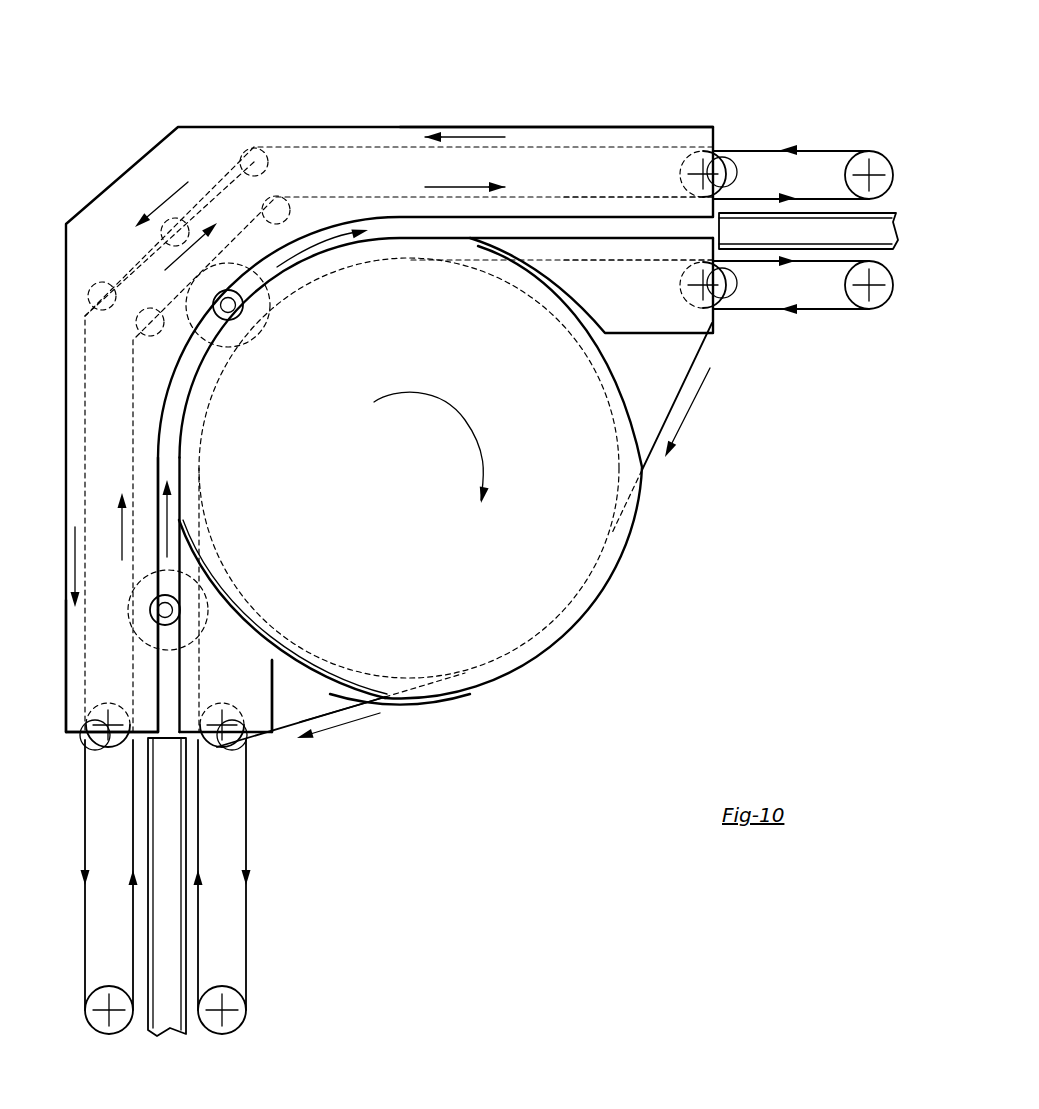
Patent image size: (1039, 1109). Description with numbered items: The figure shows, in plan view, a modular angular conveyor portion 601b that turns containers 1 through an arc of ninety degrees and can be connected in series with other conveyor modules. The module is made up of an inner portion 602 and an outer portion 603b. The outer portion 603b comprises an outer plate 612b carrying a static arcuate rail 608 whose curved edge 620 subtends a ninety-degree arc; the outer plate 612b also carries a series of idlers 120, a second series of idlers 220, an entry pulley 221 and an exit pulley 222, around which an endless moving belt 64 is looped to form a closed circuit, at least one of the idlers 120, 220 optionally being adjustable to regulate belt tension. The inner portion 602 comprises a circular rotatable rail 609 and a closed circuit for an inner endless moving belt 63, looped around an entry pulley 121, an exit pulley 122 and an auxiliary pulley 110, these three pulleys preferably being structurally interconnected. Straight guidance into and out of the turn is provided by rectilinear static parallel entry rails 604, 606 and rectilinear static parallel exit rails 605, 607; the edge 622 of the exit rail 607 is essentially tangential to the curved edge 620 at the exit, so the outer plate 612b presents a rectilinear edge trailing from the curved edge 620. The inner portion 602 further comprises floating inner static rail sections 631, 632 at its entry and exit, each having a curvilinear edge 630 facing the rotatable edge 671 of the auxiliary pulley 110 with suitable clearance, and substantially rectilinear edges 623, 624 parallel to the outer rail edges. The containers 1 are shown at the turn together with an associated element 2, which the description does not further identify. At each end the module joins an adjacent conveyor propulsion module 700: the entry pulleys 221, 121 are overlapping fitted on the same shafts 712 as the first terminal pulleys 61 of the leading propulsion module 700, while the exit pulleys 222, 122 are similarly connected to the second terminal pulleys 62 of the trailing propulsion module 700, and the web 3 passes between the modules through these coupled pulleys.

The modular angular conveyor portion 601b is at (118, 78).
The outer portion 603b is at (138, 185).
The outer plate 612b is at (380, 137).
The edge 620 is at (323, 225).
The endless moving belt 64 is at (128, 250).
The second series of idlers 220 is at (250, 155).
The static arcuate rail 608 is at (170, 300).
The series of idlers 120 is at (155, 327).
The inner portion 602 is at (223, 447).
The containers 1 is at (243, 290).
The roller housing 2 is at (242, 315).
The circular rotatable rail 609 is at (582, 610).
The curvilinear edge 630 is at (550, 313).
The auxiliary pulley 110 is at (572, 494).
The floating inner static rail section 632 is at (653, 290).
The rectilinear static parallel exit rail 605 is at (533, 245).
The rectilinear edge 624 is at (565, 240).
The edge 622 is at (587, 220).
The rectilinear static parallel exit rail 607 is at (630, 205).
The shafts 712 is at (696, 150).
The exit pulley 222 is at (716, 152).
The exit pulley 122 is at (717, 295).
The entry pulley 221 is at (95, 735).
The entry pulley 121 is at (230, 747).
The first terminal pulleys 61 is at (735, 150).
The conveyor propulsion module 700 is at (823, 293).
The second terminal pulleys 62 is at (850, 152).
The sheet 3 is at (862, 230).
The rectilinear static parallel entry rail 604 is at (187, 663).
The rectilinear static parallel entry rail 606 is at (133, 670).
The rectilinear edge 623 is at (177, 693).
The floating inner static rail section 631 is at (213, 648).
The rotatable edge 671 is at (507, 682).
The inner endless moving belt 63 is at (380, 697).